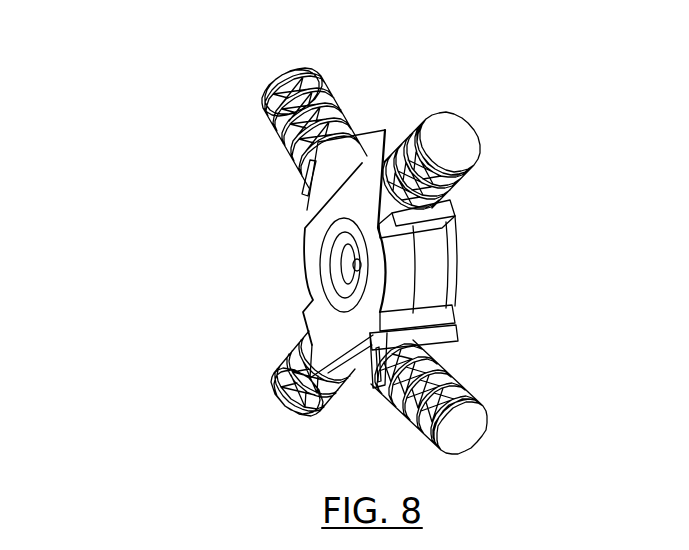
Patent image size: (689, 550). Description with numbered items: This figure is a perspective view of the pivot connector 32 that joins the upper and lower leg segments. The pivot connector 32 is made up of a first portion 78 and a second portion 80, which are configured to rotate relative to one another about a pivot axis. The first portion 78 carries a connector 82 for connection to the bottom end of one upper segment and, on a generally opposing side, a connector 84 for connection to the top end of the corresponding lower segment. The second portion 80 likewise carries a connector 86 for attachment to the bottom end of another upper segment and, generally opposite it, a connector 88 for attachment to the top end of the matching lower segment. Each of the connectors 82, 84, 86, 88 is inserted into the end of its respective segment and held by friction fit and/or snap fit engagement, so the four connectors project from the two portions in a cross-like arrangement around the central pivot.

The pivot connector 32 is at (170, 108).
The first portion 78 is at (312, 239).
The second portion 80 is at (433, 266).
The connector 82 is at (262, 125).
The connector 84 is at (505, 416).
The connector 86 is at (475, 100).
The connector 88 is at (268, 402).